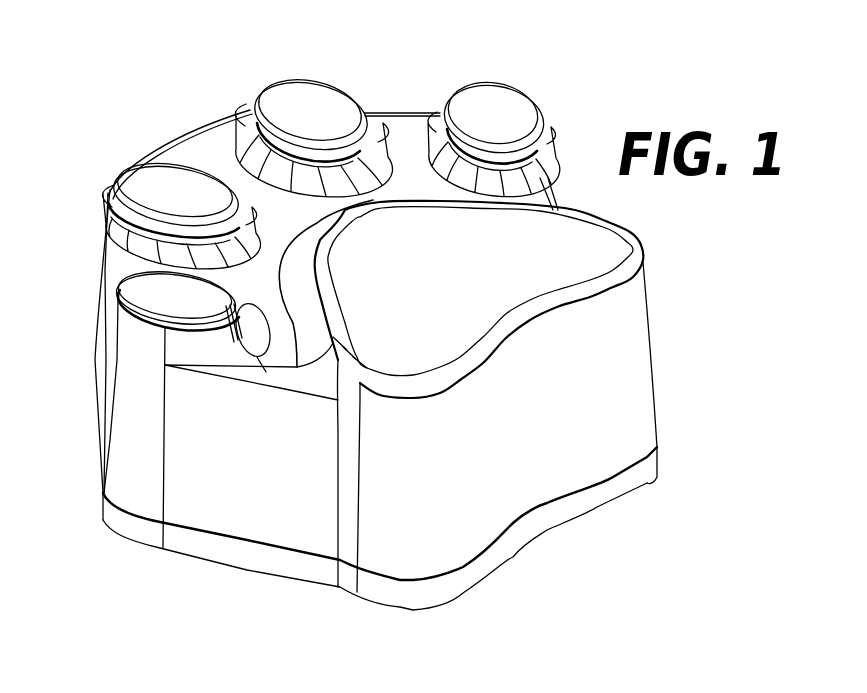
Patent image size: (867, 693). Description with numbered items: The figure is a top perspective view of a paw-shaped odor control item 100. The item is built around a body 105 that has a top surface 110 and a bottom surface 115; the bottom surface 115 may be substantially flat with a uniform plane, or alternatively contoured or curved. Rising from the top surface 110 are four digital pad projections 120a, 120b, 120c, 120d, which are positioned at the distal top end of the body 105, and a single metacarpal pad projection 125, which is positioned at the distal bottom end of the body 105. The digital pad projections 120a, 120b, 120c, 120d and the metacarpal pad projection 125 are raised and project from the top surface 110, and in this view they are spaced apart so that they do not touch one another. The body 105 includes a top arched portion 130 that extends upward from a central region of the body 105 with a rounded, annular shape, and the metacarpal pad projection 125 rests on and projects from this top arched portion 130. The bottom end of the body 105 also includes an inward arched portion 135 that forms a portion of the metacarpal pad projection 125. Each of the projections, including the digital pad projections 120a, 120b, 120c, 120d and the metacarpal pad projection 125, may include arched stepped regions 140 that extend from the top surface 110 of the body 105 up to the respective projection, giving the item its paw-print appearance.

The paw-shaped odor control item 100 is at (410, 316).
The body 105 is at (547, 533).
The top surface 110 is at (258, 366).
The bottom surface 115 is at (229, 585).
The digital pad projection 120a is at (109, 262).
The digital pad projection 120b is at (113, 172).
The digital pad projection 120c is at (284, 80).
The digital pad projection 120d is at (481, 85).
The metacarpal pad projection 125 is at (470, 281).
The top arched portion 130 is at (197, 143).
The inward arched portion 135 is at (534, 406).
The arched stepped regions 140 is at (316, 288).